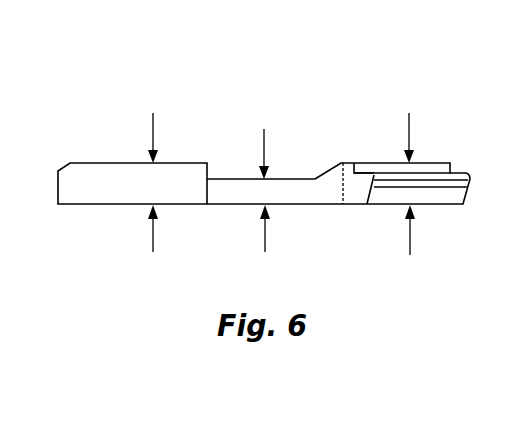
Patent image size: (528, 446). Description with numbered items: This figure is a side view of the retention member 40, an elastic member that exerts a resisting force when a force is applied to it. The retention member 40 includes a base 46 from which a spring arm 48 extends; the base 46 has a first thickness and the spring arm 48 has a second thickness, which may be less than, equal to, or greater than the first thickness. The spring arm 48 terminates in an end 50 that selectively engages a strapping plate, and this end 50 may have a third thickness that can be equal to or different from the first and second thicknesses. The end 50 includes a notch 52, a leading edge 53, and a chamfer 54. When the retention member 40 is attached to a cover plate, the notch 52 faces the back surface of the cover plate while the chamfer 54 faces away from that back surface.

The retention member 40 is at (322, 74).
The base 46 is at (119, 162).
The spring arm 48 is at (228, 192).
The end 50 is at (357, 192).
The notch 52 is at (445, 162).
The leading edge 53 is at (470, 182).
The chamfer 54 is at (431, 198).